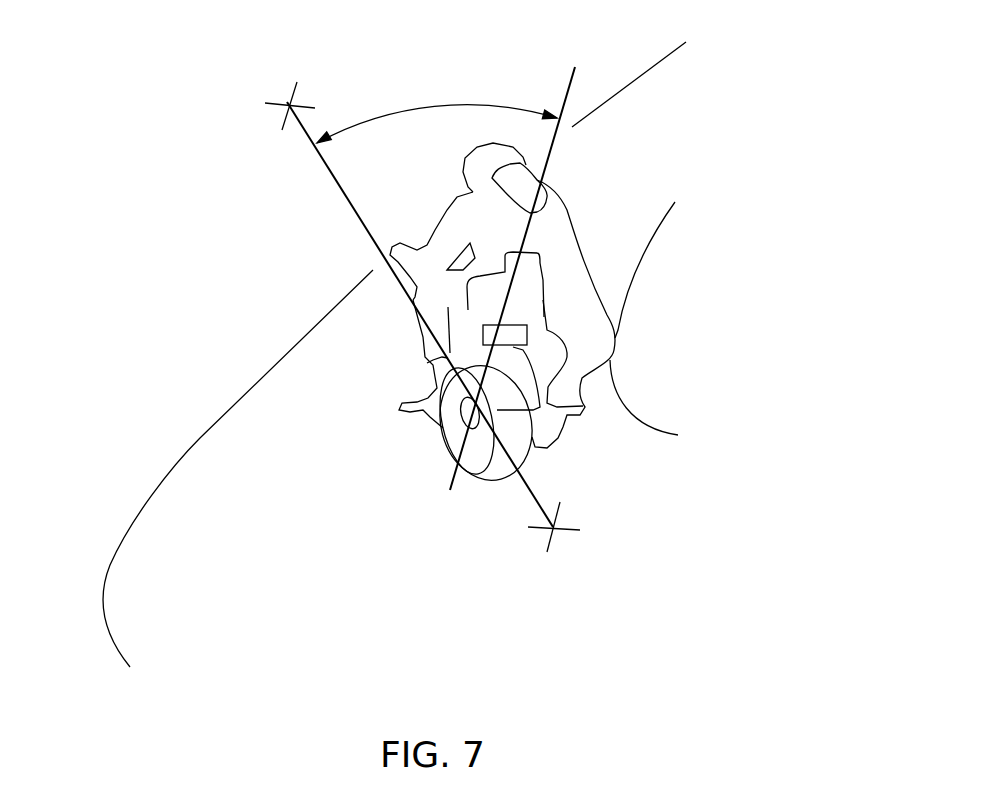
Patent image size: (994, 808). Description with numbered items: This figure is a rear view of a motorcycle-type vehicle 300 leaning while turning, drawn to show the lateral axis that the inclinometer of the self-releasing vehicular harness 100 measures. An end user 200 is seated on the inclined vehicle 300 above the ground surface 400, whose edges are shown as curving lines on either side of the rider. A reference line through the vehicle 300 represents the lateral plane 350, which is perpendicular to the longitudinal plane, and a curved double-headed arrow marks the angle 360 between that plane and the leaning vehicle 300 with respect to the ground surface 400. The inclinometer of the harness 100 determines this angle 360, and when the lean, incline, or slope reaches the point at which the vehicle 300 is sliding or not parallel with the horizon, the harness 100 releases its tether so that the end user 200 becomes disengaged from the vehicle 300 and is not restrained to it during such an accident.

The self-releasing vehicular harness 100 is at (590, 319).
The end user 200 is at (572, 208).
The vehicle 300 is at (457, 466).
The lateral plane 350 is at (345, 200).
The angle 360 is at (471, 96).
The ground surface 400 is at (200, 436).